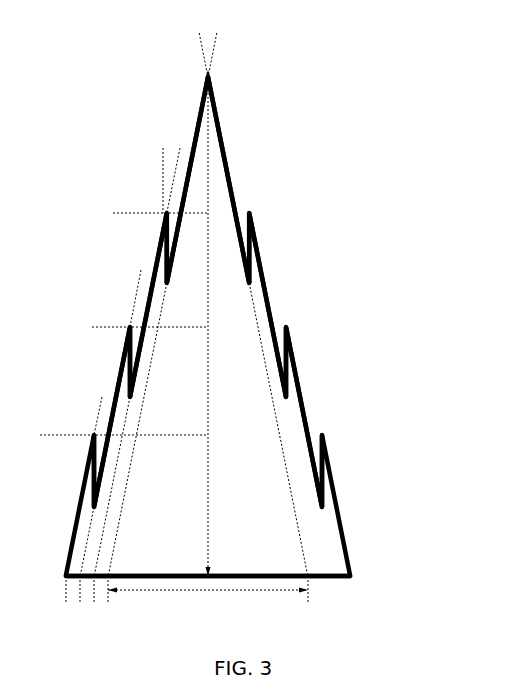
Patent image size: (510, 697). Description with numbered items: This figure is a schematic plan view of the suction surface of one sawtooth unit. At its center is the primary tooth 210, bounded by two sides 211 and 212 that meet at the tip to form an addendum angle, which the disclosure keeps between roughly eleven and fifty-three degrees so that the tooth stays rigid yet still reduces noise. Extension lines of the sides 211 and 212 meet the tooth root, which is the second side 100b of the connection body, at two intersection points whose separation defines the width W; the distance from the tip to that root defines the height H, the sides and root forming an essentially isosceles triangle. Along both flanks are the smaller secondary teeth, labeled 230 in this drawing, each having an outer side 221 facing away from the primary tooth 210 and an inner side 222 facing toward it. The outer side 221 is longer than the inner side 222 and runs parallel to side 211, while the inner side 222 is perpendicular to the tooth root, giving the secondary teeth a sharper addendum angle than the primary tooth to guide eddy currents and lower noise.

The primary tooth 210 is at (216, 184).
The side 211 is at (191, 162).
The side 212 is at (237, 205).
The outer side 221 is at (152, 272).
The inner side 222 is at (156, 257).
The serrated teeth 230 is at (288, 420).
The second side 100b is at (327, 577).